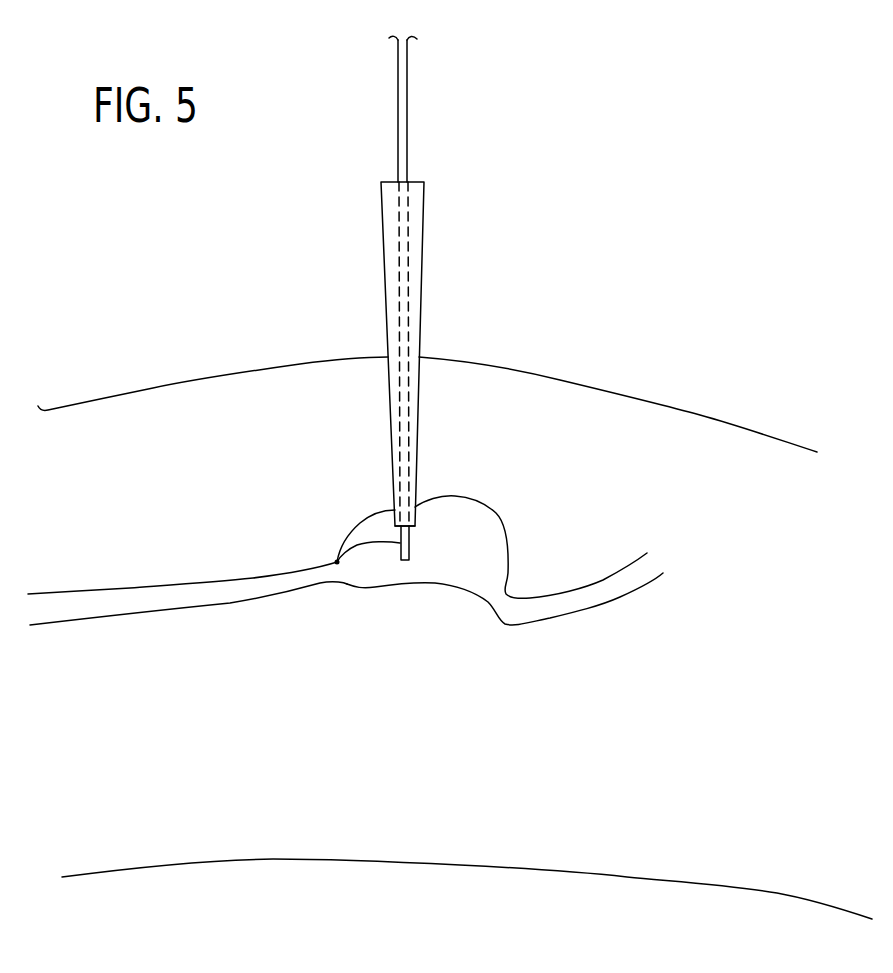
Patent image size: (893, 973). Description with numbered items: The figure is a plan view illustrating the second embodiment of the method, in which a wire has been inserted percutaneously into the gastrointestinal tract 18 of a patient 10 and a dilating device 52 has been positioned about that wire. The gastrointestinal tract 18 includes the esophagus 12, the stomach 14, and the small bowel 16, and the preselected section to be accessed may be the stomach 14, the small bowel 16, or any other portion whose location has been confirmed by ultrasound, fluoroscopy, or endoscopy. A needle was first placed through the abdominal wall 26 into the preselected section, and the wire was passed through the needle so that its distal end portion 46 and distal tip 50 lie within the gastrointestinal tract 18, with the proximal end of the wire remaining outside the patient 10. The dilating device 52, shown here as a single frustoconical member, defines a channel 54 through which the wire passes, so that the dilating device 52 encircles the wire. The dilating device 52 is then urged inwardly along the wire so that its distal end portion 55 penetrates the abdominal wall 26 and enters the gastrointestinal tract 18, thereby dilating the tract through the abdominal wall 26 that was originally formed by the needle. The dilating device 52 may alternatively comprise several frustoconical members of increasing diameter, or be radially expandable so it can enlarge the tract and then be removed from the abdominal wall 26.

The patient 10 is at (700, 415).
The esophagus 12 is at (132, 588).
The stomach 14 is at (492, 512).
The small bowel 16 is at (600, 582).
The gastrointestinal tract 18 is at (232, 603).
The abdominal wall 26 is at (277, 368).
The distal end portion 46 is at (341, 554).
The distal tip 50 is at (410, 563).
The dilating device 52 is at (422, 306).
The channel 54 is at (407, 217).
The distal end portion 55 is at (395, 518).